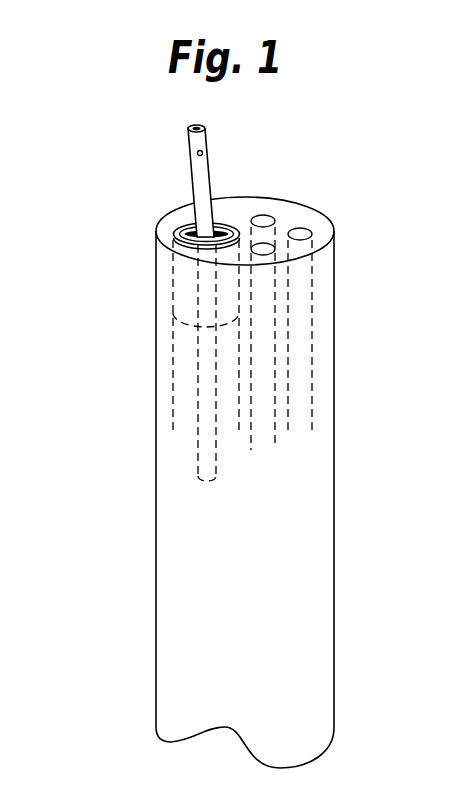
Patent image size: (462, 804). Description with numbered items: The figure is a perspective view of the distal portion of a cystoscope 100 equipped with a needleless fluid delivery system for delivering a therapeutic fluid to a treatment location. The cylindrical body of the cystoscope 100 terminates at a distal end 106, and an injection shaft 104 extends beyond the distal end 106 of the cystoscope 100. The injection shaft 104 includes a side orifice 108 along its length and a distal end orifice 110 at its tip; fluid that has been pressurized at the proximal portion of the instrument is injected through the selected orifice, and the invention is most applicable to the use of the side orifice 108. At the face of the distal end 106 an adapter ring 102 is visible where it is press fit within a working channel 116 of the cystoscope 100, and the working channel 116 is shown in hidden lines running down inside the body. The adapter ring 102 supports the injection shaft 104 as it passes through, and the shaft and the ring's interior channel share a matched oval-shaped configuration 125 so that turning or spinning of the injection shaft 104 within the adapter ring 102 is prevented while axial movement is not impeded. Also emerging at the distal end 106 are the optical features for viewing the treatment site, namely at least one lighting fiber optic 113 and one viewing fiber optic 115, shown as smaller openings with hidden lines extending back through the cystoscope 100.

The cystoscope 100 is at (345, 413).
The adapter ring 102 is at (181, 232).
The injection shaft 104 is at (190, 167).
The distal end 106 is at (314, 207).
The side orifice 108 is at (203, 153).
The distal end orifice 110 is at (191, 126).
The lighting fiber optic 113 is at (264, 215).
The viewing fiber optic 115 is at (313, 231).
The working channel 116 is at (173, 388).
The oval-shaped configuration 125 is at (201, 127).